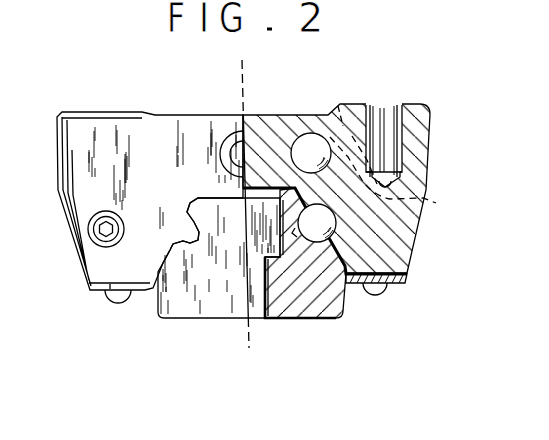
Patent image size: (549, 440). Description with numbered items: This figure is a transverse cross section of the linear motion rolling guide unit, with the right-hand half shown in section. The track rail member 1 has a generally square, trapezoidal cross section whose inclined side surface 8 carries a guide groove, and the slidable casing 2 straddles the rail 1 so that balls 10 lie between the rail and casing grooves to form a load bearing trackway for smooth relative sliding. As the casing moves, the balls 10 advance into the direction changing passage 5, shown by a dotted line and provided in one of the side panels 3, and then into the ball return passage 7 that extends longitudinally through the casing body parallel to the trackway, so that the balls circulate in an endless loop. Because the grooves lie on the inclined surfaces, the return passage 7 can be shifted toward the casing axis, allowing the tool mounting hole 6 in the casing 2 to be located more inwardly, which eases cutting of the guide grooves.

The track rail member 1 is at (207, 319).
The slidable casing 2 is at (263, 120).
The side panel 3 is at (171, 127).
The direction changing passage 5 is at (393, 163).
The tool mounting hole 6 is at (384, 104).
The ball return passage 7 is at (312, 131).
The inclined side surface 8 is at (351, 286).
The ball 10 is at (313, 243).